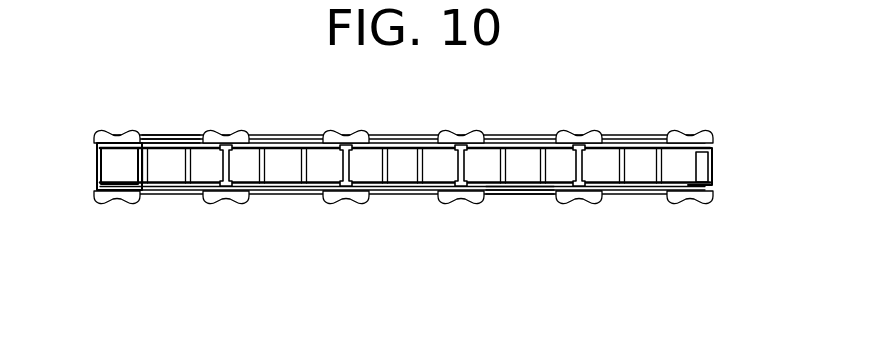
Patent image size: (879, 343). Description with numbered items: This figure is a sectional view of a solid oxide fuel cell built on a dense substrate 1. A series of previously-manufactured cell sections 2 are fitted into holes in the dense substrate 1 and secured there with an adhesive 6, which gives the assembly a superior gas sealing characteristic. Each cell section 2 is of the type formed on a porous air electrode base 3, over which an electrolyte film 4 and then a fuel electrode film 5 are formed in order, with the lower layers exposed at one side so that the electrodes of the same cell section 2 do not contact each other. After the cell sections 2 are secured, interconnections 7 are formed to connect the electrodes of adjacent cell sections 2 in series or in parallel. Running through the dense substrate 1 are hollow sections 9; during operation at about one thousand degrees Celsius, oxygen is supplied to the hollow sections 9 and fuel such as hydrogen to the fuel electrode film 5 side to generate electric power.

The dense substrate 1 is at (98, 178).
The cell section 2 is at (598, 236).
The porous air electrode base 3 is at (568, 197).
The electrolyte film 4 is at (538, 197).
The fuel electrode film 5 is at (174, 137).
The adhesive 6 is at (703, 155).
The interconnection 7 is at (117, 134).
The hollow section 9 is at (173, 177).